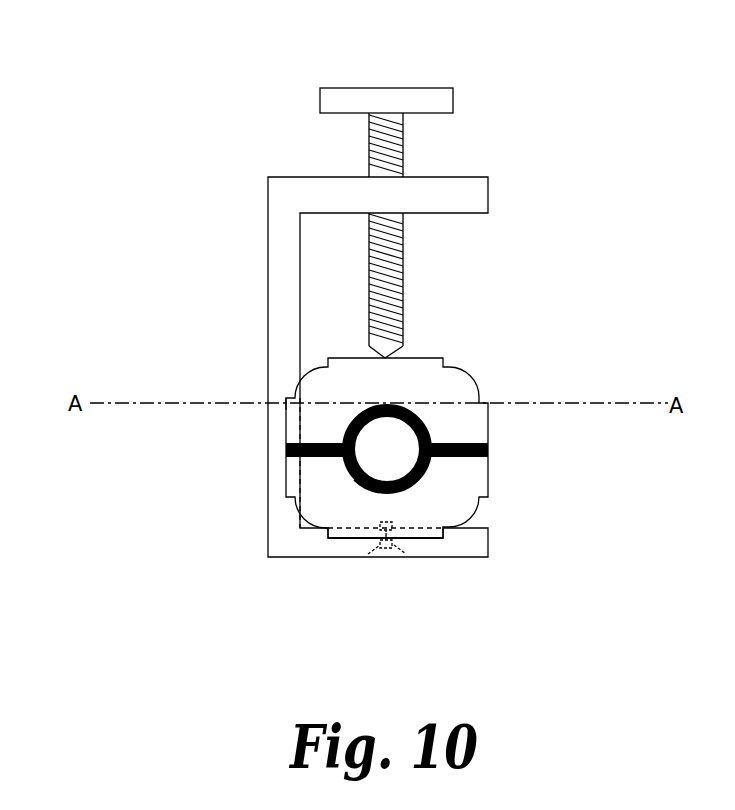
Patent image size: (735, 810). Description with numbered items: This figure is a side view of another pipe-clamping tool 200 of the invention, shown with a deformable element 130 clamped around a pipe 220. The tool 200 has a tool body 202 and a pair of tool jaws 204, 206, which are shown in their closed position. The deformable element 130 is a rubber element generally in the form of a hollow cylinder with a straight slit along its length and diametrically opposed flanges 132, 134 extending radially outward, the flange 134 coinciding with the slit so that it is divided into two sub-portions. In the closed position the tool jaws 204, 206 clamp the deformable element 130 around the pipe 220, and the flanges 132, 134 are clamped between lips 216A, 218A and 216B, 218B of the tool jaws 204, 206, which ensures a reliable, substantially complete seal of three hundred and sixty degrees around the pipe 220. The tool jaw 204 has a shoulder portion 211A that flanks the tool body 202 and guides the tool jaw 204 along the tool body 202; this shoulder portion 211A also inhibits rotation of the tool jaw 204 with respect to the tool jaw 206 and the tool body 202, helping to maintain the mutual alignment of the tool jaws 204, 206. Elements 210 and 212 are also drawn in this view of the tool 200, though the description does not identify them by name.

The tool 200 is at (560, 242).
The tool body 202 is at (268, 212).
The tool jaw 204 is at (413, 370).
The tool jaw 206 is at (408, 517).
The threaded screw 210 is at (402, 147).
The shoulder portion 211A is at (287, 403).
The screw head plate 212 is at (442, 100).
The deformable element 130 is at (423, 422).
The flange 132 is at (287, 452).
The flange 134 is at (488, 452).
The lip 216A is at (463, 445).
The lip 216B is at (305, 443).
The lip 218A is at (307, 457).
The lip 218B is at (468, 457).
The pipe 220 is at (368, 490).